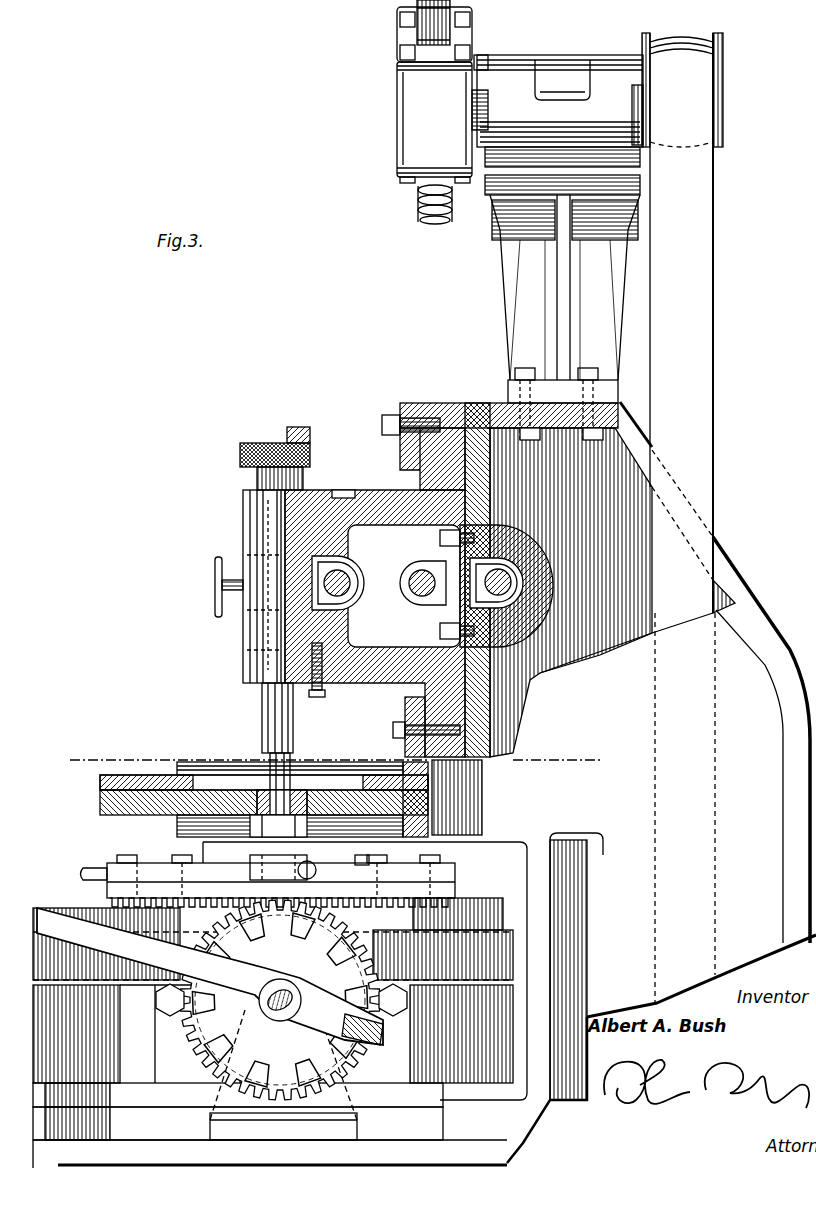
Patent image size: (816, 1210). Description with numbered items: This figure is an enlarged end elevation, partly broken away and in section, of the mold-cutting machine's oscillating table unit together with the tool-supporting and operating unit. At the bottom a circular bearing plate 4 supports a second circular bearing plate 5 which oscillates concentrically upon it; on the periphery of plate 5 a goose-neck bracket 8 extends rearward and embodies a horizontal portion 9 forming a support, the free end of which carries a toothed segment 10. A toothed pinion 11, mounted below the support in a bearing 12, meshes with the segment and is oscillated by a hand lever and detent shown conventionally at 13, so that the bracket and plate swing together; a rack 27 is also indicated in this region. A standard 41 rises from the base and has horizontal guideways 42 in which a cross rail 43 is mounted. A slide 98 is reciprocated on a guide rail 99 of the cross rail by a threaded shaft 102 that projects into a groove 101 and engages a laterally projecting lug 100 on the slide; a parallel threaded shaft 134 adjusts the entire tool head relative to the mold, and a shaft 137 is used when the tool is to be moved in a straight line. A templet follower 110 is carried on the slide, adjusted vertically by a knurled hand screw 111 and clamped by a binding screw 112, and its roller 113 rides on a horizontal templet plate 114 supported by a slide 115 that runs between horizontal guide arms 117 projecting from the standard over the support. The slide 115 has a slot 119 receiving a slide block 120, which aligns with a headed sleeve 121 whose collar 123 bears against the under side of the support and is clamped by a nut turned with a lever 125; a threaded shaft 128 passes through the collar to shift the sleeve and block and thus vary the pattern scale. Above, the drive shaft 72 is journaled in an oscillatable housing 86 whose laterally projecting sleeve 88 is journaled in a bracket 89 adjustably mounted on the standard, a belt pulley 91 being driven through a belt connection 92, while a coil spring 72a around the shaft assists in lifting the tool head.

The drive shaft 72 is at (452, 6).
The laterally projecting sleeve 88 is at (478, 55).
The oscillatable housing 86 is at (397, 115).
The bracket 89 is at (560, 217).
The belt pulley 91 is at (723, 82).
The coil spring 72a is at (418, 210).
The belt connection 92 is at (697, 417).
The knurled hand screw 111 is at (296, 427).
The horizontal guideways 42 is at (400, 455).
The cross rail 43 is at (398, 490).
The slide 98 is at (262, 548).
The threaded shaft 102 is at (342, 578).
The laterally projecting lug 100 is at (352, 592).
The binding screw 112 is at (215, 595).
The threaded shaft 134 is at (425, 596).
The groove 101 is at (368, 632).
The standard 41 is at (713, 613).
The templet follower 110 is at (262, 709).
The guide rail 99 is at (322, 698).
The shaft 137 is at (510, 600).
The goose-neck bracket 8 is at (324, 756).
The horizontal guide arms 117 is at (186, 762).
The roller 113 is at (268, 772).
The slide block 120 is at (298, 795).
The templet plate 114 is at (100, 782).
The slot 119 is at (258, 796).
The slide 115 is at (100, 808).
The headed sleeve 121 is at (266, 830).
The collar 123 is at (282, 872).
The threaded shaft 128 is at (360, 868).
The horizontal portion 9 is at (425, 863).
The toothed segment 10 is at (448, 885).
The lever 125 is at (84, 870).
The rack 27 is at (167, 905).
The hand lever and detent 13 is at (222, 986).
The toothed pinion 11 is at (225, 930).
The second circular bearing plate 5 is at (273, 990).
The circular bearing plate 4 is at (270, 1125).
The bearing 12 is at (330, 1091).